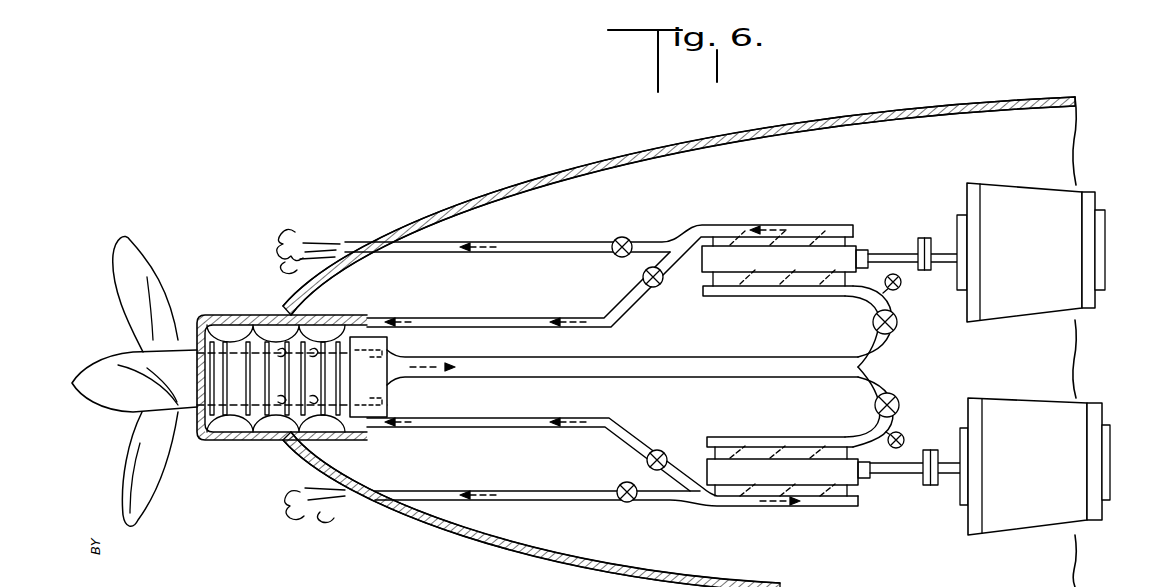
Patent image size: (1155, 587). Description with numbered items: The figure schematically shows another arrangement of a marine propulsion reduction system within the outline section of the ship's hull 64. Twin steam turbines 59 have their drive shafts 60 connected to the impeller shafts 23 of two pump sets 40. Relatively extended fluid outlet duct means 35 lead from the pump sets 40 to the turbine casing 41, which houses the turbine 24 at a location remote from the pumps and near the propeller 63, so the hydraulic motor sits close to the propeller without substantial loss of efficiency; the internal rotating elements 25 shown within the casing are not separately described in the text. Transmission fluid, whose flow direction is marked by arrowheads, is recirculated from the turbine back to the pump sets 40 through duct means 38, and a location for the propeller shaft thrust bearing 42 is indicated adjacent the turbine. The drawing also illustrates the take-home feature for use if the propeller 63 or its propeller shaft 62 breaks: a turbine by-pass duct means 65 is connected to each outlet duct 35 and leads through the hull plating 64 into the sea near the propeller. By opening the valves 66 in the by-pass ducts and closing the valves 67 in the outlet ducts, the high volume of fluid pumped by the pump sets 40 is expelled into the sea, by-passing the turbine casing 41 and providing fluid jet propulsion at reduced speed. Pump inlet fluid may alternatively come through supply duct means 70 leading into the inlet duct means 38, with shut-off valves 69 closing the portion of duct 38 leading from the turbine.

The impeller shaft 23 is at (898, 247).
The turbine 24 is at (217, 440).
The coil windings 25 is at (222, 350).
The fluid outlet duct means 35 is at (740, 226).
The duct means 38 is at (512, 370).
The pump set 40 is at (853, 243).
The turbine casing 41 is at (252, 441).
The propeller shaft thrust bearing 42 is at (381, 340).
The steam turbine 59 is at (1075, 268).
The drive shaft 60 is at (944, 252).
The propeller shaft 62 is at (186, 350).
The propeller 63 is at (150, 268).
The hull 64 is at (820, 123).
The turbine by-pass duct means 65 is at (581, 243).
The valve 66 is at (625, 238).
The valve 67 is at (650, 290).
The shut-off valve 69 is at (898, 322).
The supply duct means 70 is at (902, 283).